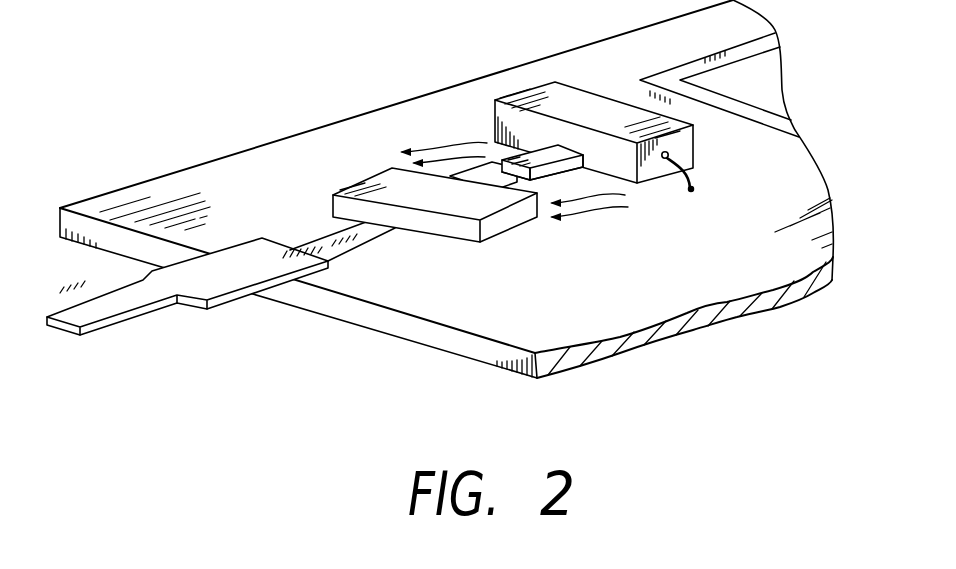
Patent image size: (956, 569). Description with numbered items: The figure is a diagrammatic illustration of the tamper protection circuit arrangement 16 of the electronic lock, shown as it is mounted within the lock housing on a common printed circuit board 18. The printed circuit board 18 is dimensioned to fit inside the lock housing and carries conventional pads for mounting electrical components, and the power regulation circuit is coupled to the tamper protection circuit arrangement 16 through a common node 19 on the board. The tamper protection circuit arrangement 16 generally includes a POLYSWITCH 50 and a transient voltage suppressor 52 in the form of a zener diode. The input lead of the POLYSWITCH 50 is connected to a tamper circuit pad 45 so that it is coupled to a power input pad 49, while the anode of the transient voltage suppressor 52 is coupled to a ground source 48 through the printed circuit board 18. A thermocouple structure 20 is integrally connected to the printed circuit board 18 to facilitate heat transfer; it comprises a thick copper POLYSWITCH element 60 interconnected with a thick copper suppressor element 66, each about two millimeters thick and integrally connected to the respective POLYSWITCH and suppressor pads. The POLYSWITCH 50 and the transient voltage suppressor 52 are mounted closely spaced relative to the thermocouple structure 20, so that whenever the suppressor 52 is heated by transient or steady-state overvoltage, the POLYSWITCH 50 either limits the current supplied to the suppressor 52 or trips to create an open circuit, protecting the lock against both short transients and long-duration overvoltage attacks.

The tamper protection circuit arrangement 16 is at (334, 179).
The printed circuit board 18 is at (422, 343).
The common node 19 is at (727, 98).
The thermocouple structure 20 is at (550, 172).
The tamper circuit pad 45 is at (358, 235).
The ground source 48 is at (682, 192).
The power input pad 49 is at (253, 257).
The POLYSWITCH 50 is at (388, 192).
The transient voltage suppressor 52 is at (553, 97).
The POLYSWITCH element 60 is at (477, 173).
The suppressor element 66 is at (547, 157).